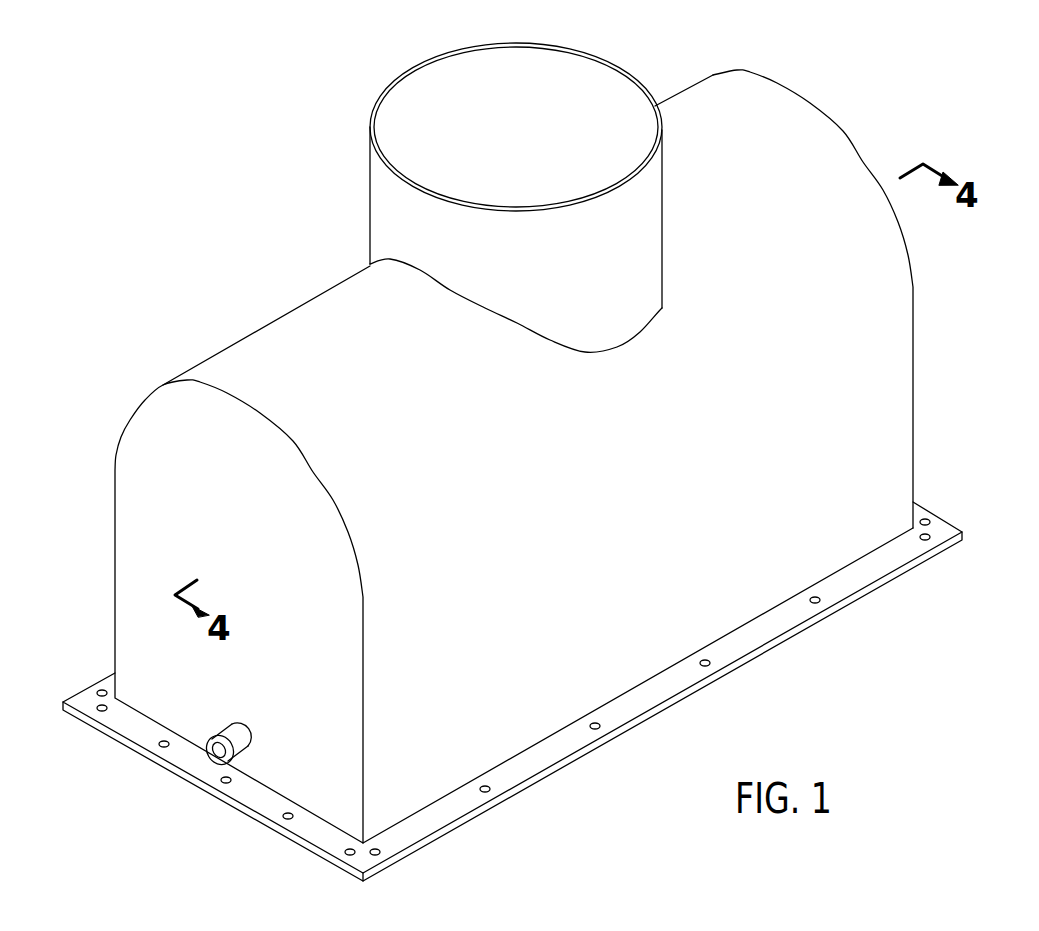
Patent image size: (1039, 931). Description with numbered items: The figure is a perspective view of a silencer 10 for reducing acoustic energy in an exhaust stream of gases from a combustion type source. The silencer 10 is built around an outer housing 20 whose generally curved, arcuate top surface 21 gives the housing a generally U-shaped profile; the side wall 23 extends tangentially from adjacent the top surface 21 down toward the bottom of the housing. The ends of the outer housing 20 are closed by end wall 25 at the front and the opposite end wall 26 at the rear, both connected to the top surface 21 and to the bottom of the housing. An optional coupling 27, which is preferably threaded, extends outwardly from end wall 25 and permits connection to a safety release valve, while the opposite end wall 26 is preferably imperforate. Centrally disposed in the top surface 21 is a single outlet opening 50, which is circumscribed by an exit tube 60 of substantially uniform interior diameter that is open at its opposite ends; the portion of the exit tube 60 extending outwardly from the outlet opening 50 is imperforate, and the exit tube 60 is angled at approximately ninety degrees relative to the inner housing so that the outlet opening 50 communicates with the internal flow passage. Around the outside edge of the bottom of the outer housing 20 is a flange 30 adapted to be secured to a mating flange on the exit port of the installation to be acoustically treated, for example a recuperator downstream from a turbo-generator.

The silencer 10 is at (182, 323).
The outer housing 20 is at (867, 347).
The top surface 21 is at (294, 320).
The side wall 23 is at (715, 530).
The end wall 25 is at (202, 486).
The end wall 26 is at (912, 270).
The coupling 27 is at (250, 733).
The flange 30 is at (553, 746).
The outlet opening 50 is at (640, 341).
The exit tube 60 is at (383, 203).